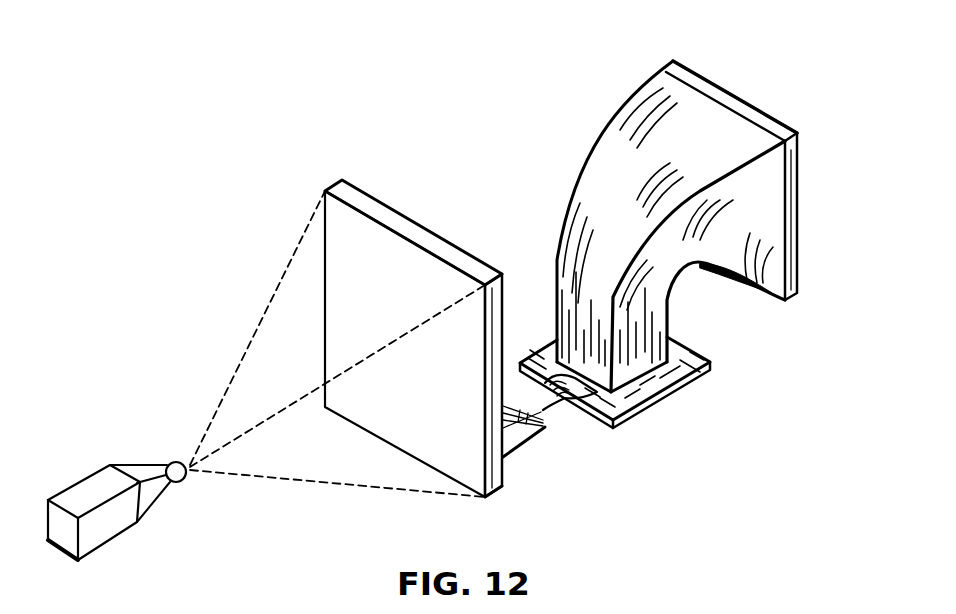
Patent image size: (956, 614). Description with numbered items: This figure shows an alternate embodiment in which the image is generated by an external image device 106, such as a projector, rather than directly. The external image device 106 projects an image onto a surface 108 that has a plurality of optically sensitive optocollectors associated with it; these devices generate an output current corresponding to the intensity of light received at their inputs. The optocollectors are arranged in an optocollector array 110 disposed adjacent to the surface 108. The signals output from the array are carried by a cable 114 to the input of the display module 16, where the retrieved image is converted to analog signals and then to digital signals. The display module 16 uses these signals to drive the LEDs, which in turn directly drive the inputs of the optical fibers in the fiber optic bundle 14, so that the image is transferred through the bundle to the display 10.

The display 10 is at (745, 108).
The fiber optic bundle 14 is at (613, 165).
The display module 16 is at (663, 403).
The external image device 106 is at (102, 523).
The surface 108 is at (365, 253).
The optocollector array 110 is at (497, 315).
The cable 114 is at (545, 427).